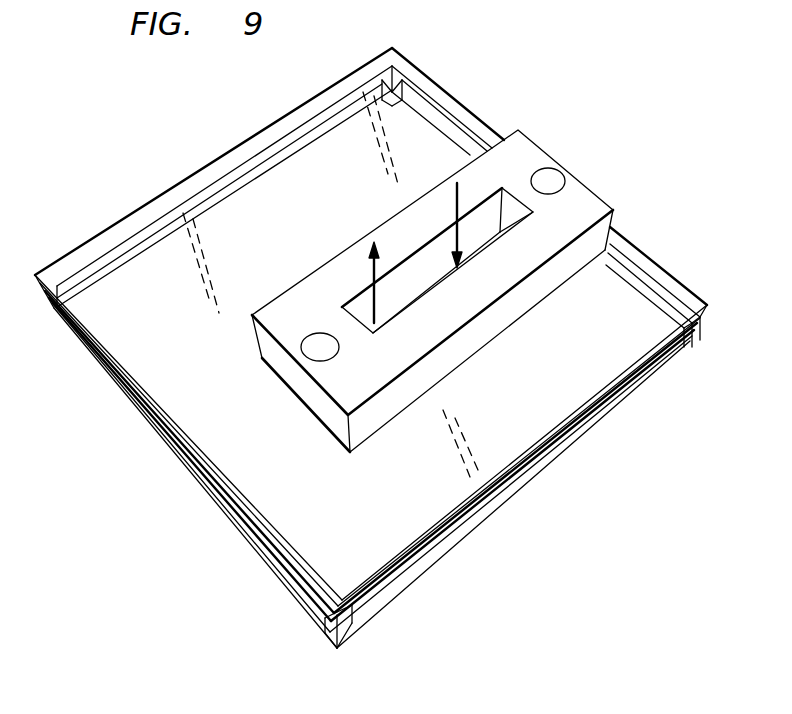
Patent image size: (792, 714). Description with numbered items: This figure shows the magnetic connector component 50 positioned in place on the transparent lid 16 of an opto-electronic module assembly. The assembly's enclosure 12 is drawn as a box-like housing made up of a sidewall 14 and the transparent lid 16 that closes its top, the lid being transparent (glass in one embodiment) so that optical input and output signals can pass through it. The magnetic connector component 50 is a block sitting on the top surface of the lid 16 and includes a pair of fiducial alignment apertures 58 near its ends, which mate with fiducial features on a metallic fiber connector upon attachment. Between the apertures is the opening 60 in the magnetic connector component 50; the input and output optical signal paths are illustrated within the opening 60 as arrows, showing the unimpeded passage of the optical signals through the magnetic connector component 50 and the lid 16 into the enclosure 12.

The enclosure 12 is at (731, 299).
The sidewall 14 is at (550, 458).
The transparent lid 16 is at (134, 218).
The magnetic connector component 50 is at (616, 220).
The fiducial alignment apertures 58 is at (553, 178).
The opening 60 is at (428, 288).